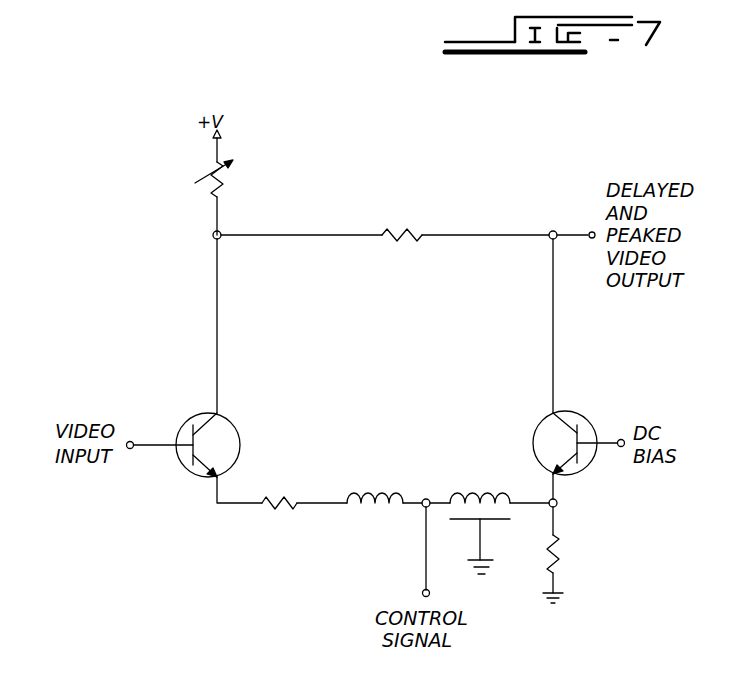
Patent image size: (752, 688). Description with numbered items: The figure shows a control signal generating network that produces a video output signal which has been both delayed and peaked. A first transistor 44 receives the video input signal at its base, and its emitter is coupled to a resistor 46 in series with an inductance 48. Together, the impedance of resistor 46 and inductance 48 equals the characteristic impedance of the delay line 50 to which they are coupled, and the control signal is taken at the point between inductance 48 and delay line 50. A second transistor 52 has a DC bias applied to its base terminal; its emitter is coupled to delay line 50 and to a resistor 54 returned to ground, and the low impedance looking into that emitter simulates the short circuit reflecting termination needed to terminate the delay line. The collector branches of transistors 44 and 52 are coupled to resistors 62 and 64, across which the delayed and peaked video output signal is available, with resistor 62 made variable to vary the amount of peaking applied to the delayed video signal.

The first transistor 44 is at (202, 480).
The resistor 46 is at (288, 505).
The inductance 48 is at (357, 507).
The delay line 50 is at (465, 505).
The second transistor 52 is at (543, 413).
The resistor 54 is at (562, 545).
The resistor 62 is at (220, 178).
The resistor 64 is at (400, 228).